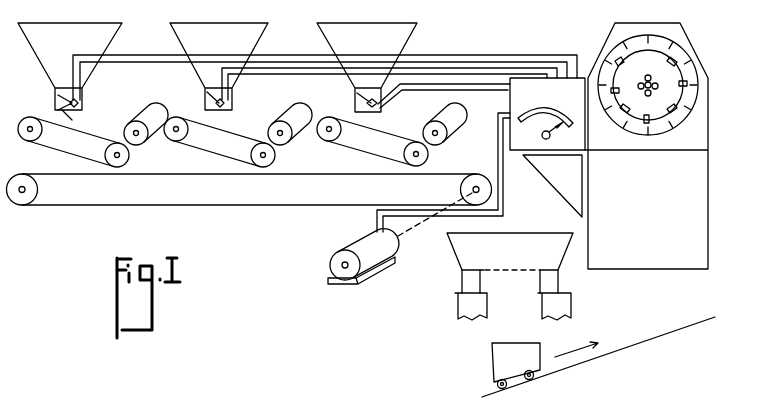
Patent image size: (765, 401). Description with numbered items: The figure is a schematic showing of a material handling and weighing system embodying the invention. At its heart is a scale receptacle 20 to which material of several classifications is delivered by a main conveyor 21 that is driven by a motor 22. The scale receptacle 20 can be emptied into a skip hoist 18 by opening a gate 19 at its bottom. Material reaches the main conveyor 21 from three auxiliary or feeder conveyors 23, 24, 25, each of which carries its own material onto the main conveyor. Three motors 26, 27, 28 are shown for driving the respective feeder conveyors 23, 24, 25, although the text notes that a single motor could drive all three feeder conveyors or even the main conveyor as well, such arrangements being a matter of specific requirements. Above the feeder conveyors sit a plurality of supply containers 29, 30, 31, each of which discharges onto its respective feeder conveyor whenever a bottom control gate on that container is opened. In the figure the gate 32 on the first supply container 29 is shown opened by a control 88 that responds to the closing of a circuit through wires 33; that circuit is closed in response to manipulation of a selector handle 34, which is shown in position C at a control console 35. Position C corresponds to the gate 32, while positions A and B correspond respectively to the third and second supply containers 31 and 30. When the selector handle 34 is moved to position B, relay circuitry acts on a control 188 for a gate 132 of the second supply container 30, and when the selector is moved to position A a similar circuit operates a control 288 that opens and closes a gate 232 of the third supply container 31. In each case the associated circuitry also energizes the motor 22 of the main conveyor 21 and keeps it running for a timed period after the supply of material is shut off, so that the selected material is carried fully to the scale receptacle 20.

The skip hoist 18 is at (500, 346).
The gate 19 is at (500, 282).
The scale receptacle 20 is at (548, 218).
The main conveyor 21 is at (240, 208).
The motor 22 is at (355, 246).
The feeder conveyor 23 is at (60, 153).
The feeder conveyor 24 is at (214, 153).
The feeder conveyor 25 is at (370, 152).
The motor 26 is at (156, 112).
The motor 27 is at (298, 114).
The motor 28 is at (455, 114).
The supply container 29 is at (77, 27).
The supply container 30 is at (221, 27).
The supply container 31 is at (369, 27).
The gate 32 is at (70, 118).
The wires 33 is at (138, 60).
The selector handle 34 is at (552, 140).
The control console 35 is at (594, 38).
The control 88 is at (80, 102).
The control 188 is at (226, 101).
The gate 132 is at (220, 114).
The control 288 is at (383, 105).
The gate 232 is at (371, 116).